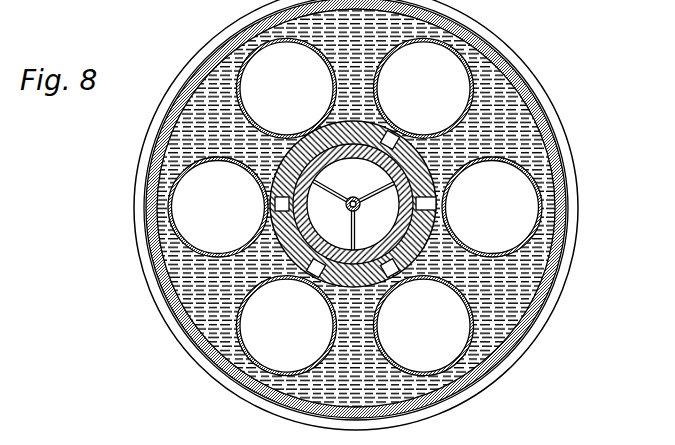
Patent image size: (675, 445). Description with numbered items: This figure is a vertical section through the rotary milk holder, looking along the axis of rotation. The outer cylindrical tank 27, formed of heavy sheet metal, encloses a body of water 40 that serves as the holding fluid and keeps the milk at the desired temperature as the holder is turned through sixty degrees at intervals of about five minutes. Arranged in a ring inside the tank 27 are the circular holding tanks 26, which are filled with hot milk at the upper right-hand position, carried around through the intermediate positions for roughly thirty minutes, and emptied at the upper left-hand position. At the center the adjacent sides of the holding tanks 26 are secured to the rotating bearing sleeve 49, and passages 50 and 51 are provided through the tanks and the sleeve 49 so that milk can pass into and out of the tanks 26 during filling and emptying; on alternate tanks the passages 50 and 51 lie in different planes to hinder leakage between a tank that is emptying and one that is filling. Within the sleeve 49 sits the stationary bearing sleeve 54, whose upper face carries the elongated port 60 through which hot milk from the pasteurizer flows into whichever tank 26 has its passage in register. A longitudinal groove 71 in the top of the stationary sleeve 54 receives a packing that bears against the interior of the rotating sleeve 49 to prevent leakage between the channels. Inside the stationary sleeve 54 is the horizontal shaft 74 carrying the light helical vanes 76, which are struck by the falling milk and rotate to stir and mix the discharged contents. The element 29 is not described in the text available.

The holding tank 26 is at (258, 122).
The tank for the holding fluid 27 is at (528, 86).
The housing rim 29 is at (578, 233).
The water 40 is at (540, 140).
The rotating bearing sleeve 49 is at (446, 228).
The passage 50 is at (276, 207).
The passage 51 is at (313, 127).
The stationary bearing sleeve 54 is at (410, 208).
The elongated port 60 is at (383, 150).
The longitudinal groove 71 is at (357, 148).
The horizontal shaft 74 is at (342, 217).
The helical vanes 76 is at (347, 206).